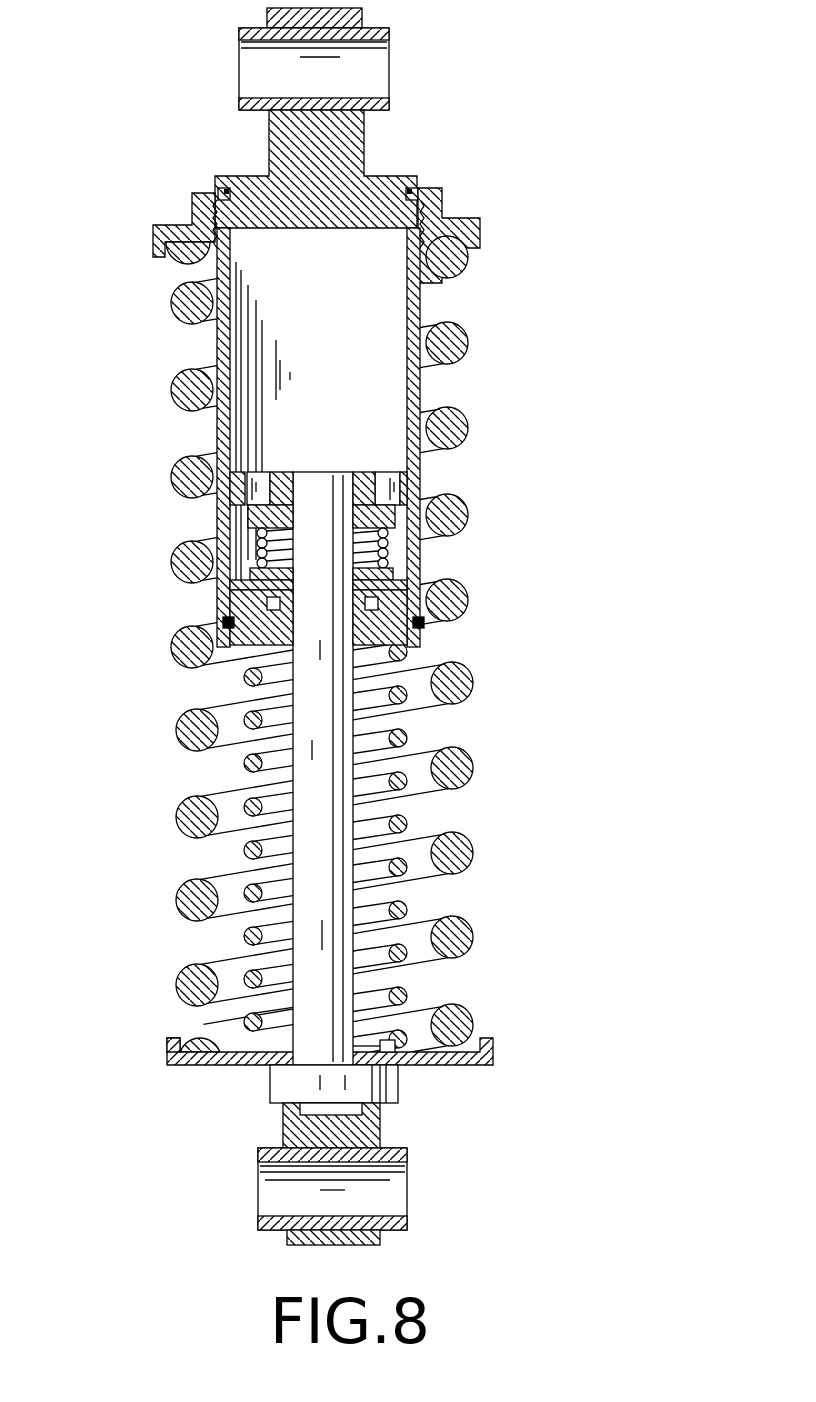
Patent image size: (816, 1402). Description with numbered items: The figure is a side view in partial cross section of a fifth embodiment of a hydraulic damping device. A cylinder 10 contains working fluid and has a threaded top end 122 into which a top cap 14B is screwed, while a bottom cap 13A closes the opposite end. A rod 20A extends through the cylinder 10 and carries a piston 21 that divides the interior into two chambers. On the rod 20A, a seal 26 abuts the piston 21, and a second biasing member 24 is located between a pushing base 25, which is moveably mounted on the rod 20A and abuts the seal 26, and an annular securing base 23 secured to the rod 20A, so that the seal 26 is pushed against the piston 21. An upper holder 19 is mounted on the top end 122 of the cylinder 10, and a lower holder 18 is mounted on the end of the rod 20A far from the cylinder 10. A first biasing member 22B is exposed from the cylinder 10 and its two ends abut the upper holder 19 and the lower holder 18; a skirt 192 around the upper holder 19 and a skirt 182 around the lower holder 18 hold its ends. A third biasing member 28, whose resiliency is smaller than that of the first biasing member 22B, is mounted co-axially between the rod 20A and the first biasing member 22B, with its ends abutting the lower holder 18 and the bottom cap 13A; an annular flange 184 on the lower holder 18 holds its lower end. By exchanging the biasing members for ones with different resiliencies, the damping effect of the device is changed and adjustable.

The top cap 14B is at (253, 190).
The top end 122 is at (234, 200).
The skirt 192 is at (155, 248).
The upper holder 19 is at (302, 206).
The cylinder 10 is at (413, 318).
The piston 21 is at (360, 456).
The pushing base 25 is at (415, 497).
The seal 26 is at (233, 508).
The second biasing member 24 is at (262, 535).
The securing base 23 is at (412, 575).
The first biasing member 22B is at (190, 560).
The bottom cap 13A is at (430, 641).
The third biasing member 28 is at (397, 780).
The rod 20A is at (343, 780).
The skirt 182 is at (172, 1050).
The annular flange 184 is at (395, 1042).
The lower holder 18 is at (287, 1062).